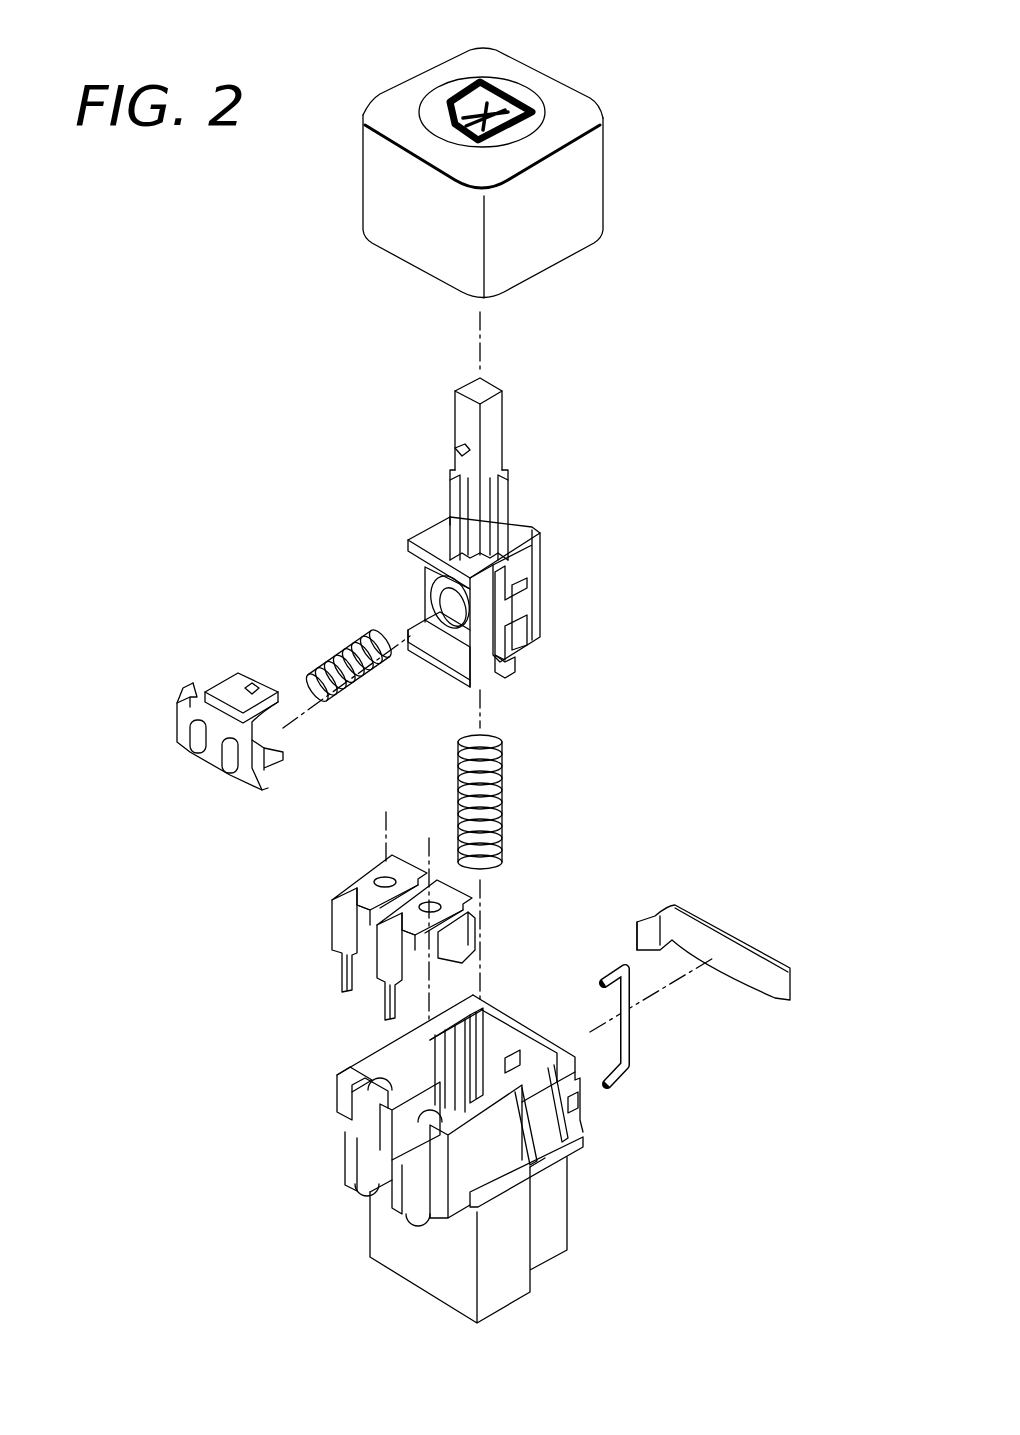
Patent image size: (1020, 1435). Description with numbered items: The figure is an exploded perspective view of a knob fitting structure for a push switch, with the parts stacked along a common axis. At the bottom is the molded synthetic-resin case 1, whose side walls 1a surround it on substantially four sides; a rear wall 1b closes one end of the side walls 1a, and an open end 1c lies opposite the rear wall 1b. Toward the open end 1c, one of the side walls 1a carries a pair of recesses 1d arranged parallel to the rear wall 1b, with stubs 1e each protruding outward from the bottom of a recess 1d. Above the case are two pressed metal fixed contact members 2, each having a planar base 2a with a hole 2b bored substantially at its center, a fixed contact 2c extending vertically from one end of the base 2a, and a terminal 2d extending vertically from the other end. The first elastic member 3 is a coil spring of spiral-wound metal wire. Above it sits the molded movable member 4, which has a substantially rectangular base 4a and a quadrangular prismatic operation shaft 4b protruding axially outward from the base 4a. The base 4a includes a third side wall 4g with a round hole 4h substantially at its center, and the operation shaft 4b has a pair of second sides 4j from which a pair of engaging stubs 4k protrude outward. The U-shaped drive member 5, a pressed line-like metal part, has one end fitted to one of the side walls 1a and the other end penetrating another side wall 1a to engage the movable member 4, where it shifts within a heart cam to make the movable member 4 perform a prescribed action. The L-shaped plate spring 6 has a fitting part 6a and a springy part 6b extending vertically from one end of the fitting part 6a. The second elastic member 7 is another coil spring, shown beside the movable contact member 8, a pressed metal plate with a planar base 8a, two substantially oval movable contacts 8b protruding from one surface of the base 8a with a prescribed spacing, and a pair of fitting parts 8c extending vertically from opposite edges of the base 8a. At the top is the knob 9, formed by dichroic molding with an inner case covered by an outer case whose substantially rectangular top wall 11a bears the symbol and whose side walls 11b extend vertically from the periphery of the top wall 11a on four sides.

The case 1 is at (459, 1144).
The side walls 1a is at (428, 1195).
The rear wall 1b is at (545, 1265).
The open end 1c is at (503, 1035).
The recesses 1d is at (415, 1140).
The stubs 1e is at (385, 1095).
The fixed contact members 2 is at (386, 900).
The planar base 2a is at (348, 898).
The hole 2b is at (383, 878).
The fixed contact 2c is at (458, 938).
The terminal 2d is at (337, 978).
The first elastic member 3 is at (516, 812).
The movable member 4 is at (512, 538).
The base 4a is at (497, 607).
The operation shaft 4b is at (503, 413).
The third side wall 4g is at (486, 615).
The round hole 4h is at (440, 600).
The second sides 4j is at (464, 432).
The engaging stubs 4k is at (456, 452).
The drive member 5 is at (638, 1037).
The plate spring 6 is at (722, 900).
The fitting part 6a is at (655, 912).
The springy part 6b is at (768, 975).
The second elastic member 7 is at (343, 638).
The movable contact member 8 is at (213, 723).
The planar base 8a is at (215, 718).
The movable contacts 8b is at (225, 762).
The fitting parts 8c is at (275, 778).
The knob 9 is at (535, 149).
The top wall 11a is at (412, 82).
The side walls 11b is at (582, 200).